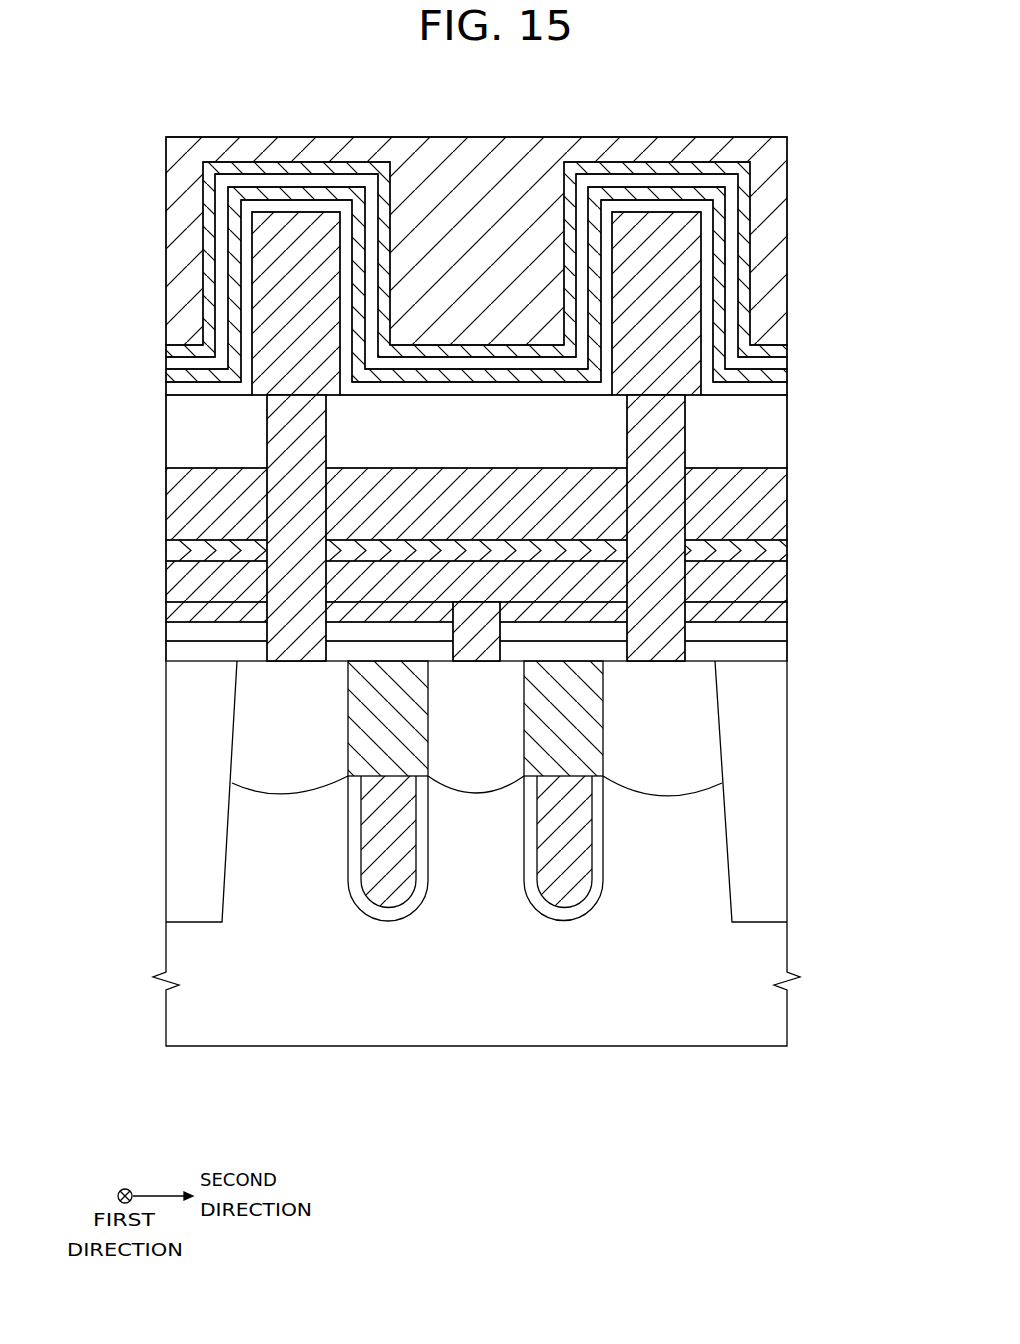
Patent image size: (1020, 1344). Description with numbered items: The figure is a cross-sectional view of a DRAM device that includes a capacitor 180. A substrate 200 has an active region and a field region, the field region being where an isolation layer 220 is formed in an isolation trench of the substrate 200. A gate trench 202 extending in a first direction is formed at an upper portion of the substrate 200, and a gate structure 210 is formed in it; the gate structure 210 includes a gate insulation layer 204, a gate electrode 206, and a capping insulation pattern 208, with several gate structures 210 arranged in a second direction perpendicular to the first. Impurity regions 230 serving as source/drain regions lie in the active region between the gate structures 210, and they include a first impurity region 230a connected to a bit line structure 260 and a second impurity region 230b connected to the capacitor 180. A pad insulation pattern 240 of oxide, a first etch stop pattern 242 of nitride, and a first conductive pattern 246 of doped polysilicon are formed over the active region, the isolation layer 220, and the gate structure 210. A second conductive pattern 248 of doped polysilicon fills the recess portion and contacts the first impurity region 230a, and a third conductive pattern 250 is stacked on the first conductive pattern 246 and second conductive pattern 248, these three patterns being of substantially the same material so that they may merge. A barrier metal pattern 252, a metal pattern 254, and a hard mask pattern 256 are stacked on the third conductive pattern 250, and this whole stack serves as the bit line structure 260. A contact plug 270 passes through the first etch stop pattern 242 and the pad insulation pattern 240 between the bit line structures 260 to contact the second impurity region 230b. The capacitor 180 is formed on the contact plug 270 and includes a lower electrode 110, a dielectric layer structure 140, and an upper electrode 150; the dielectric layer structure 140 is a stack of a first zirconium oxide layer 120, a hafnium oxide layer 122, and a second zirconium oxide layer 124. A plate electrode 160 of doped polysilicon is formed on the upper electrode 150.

The lower electrode 110 is at (692, 323).
The first zirconium oxide layer 120 is at (708, 290).
The hafnium oxide layer 122 is at (718, 258).
The second zirconium oxide layer 124 is at (730, 228).
The dielectric layer structure 140 is at (542, 284).
The upper electrode 150 is at (744, 185).
The plate electrode 160 is at (780, 151).
The capacitor 180 is at (190, 200).
The substrate 200 is at (782, 1009).
The gate trench 202 is at (340, 750).
The gate insulation layer 204 is at (360, 907).
The gate electrode 206 is at (388, 890).
The capping insulation pattern 208 is at (412, 892).
The gate structure 210 is at (460, 960).
The isolation layer 220 is at (782, 822).
The impurity regions 230 is at (453, 791).
The first impurity region 230a is at (443, 699).
The second impurity region 230b is at (267, 737).
The pad insulation pattern 240 is at (785, 650).
The first etch stop pattern 242 is at (785, 633).
The first conductive pattern 246 is at (785, 612).
The second conductive pattern 248 is at (488, 606).
The third conductive pattern 250 is at (782, 570).
The barrier metal pattern 252 is at (785, 547).
The metal pattern 254 is at (782, 500).
The hard mask pattern 256 is at (782, 428).
The bit line structure 260 is at (514, 509).
The contact plug 270 is at (277, 433).